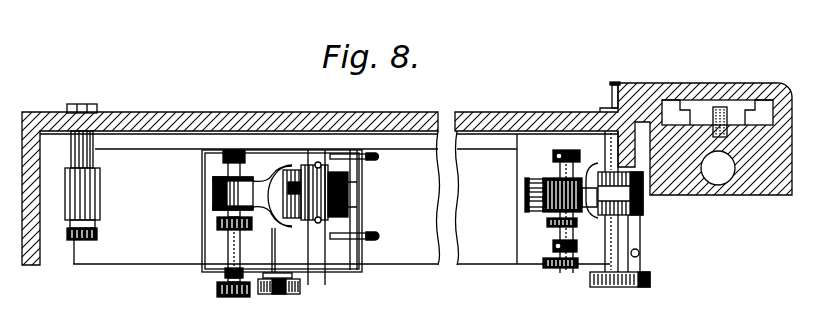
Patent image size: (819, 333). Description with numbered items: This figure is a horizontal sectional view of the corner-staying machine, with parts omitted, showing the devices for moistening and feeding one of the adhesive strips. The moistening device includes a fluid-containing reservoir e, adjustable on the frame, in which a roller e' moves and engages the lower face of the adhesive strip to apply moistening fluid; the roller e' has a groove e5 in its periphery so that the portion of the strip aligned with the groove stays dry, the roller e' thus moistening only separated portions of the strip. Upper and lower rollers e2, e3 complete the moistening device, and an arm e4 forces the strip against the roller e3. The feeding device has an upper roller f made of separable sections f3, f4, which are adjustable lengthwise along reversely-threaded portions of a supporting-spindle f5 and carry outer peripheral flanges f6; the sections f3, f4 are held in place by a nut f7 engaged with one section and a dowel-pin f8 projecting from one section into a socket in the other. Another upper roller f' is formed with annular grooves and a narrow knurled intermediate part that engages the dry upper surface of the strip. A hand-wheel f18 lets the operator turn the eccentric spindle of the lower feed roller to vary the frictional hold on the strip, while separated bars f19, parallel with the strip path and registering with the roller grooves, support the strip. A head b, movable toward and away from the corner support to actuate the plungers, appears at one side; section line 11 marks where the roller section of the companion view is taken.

The fluid-containing reservoir e is at (282, 228).
The roller e' is at (363, 196).
The upper roller e2 is at (320, 183).
The lower roller e3 is at (227, 211).
The arm e4 is at (230, 191).
The groove e5 is at (283, 195).
The upper roller f is at (538, 223).
The upper roller f' is at (624, 192).
The separable section f3 is at (540, 180).
The separable section f4 is at (552, 222).
The supporting-spindle f5 is at (556, 160).
The peripheral flange f6 is at (529, 188).
The nut f7 is at (556, 245).
The dowel-pin f8 is at (612, 98).
The hand-wheel f18 is at (638, 288).
The separated bars f19 is at (655, 185).
The head b is at (763, 185).
The shaft 11 is at (565, 152).